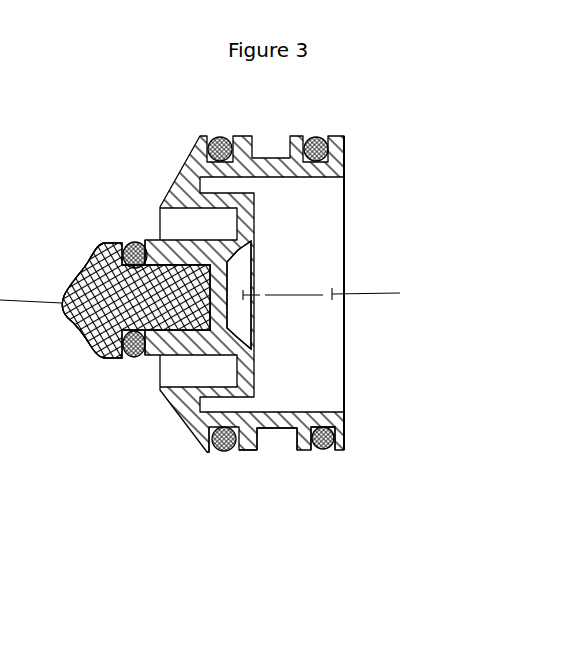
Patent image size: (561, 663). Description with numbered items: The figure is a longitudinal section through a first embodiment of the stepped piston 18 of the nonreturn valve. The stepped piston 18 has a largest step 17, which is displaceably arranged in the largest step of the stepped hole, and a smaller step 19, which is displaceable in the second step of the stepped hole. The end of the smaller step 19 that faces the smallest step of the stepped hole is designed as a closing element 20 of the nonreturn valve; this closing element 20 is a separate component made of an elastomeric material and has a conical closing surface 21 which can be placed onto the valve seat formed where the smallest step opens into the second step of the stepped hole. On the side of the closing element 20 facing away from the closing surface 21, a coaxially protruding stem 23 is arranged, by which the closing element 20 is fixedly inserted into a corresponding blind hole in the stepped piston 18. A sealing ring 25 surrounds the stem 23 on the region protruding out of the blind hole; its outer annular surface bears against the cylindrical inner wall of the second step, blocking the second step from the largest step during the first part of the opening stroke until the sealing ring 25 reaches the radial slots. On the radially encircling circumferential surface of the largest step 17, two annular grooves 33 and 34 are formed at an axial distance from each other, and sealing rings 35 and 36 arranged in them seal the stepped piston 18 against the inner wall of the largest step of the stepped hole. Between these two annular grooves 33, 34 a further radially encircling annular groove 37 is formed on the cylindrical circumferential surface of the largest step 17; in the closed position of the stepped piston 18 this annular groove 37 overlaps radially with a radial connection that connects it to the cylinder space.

The largest step 17 is at (250, 451).
The stepped piston 18 is at (292, 366).
The smaller step 19 is at (158, 393).
The closing element 20 is at (119, 387).
The conical closing surface 21 is at (90, 347).
The stem 23 is at (157, 350).
The sealing ring 25 is at (133, 358).
The annular groove 33 is at (207, 452).
The annular groove 34 is at (313, 449).
The sealing ring 35 is at (223, 451).
The sealing ring 36 is at (323, 449).
The annular groove 37 is at (274, 437).